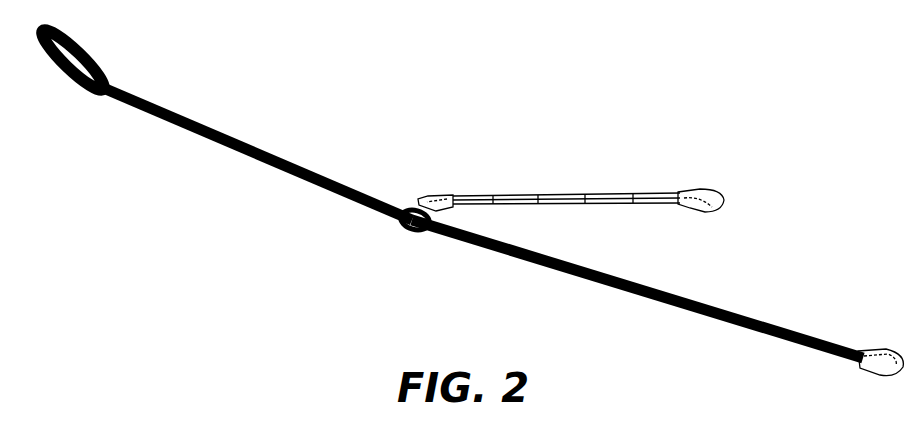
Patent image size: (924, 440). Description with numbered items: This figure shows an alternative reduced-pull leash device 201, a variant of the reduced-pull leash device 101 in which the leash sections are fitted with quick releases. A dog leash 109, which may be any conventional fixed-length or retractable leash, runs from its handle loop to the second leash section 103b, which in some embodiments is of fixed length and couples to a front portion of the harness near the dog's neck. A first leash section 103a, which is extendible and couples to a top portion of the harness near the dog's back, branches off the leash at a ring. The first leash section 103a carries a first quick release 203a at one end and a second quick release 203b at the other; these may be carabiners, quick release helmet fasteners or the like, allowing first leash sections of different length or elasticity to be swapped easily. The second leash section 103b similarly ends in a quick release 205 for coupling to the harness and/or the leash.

The reduced-pull leash device 101 is at (396, 229).
The first leash section 103a is at (548, 194).
The second leash section 103b is at (661, 310).
The dog leash 109 is at (223, 138).
The reduced-pull leash device 201 is at (638, 146).
The first quick release 203a is at (442, 193).
The second quick release 203b is at (703, 192).
The quick release 205 is at (885, 354).